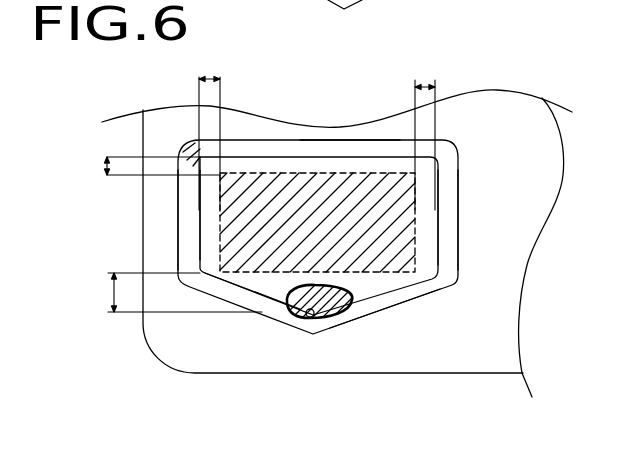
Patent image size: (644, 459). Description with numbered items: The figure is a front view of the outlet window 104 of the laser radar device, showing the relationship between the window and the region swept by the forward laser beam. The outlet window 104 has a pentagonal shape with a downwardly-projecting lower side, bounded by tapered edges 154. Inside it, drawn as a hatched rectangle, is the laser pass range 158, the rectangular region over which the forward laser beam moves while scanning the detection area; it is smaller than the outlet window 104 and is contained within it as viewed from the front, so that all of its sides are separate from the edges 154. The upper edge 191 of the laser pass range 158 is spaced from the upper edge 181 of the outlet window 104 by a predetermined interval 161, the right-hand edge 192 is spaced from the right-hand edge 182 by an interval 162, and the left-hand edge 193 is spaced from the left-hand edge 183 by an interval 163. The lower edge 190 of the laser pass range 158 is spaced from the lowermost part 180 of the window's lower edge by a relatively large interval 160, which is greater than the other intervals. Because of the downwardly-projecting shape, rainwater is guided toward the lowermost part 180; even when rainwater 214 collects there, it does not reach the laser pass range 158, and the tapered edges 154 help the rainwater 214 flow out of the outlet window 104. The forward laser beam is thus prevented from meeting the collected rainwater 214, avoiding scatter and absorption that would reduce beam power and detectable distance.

The outlet window 104 is at (442, 148).
The edges of the outlet window 154 is at (418, 293).
The laser pass range 158 is at (417, 222).
The interval 160 is at (113, 292).
The interval 161 is at (107, 165).
The interval 162 is at (424, 128).
The interval 163 is at (211, 127).
The lowermost part of the lower edge 180 is at (320, 318).
The upper edge of the outlet window 181 is at (336, 142).
The right-hand edge of the outlet window 182 is at (438, 236).
The left-hand edge of the outlet window 183 is at (198, 226).
The lower edge of the laser pass range 190 is at (275, 273).
The upper edge of the laser pass range 191 is at (268, 172).
The right-hand edge of the laser pass range 192 is at (438, 253).
The left-hand edge of the laser pass range 193 is at (200, 208).
The rainwater 214 is at (327, 311).